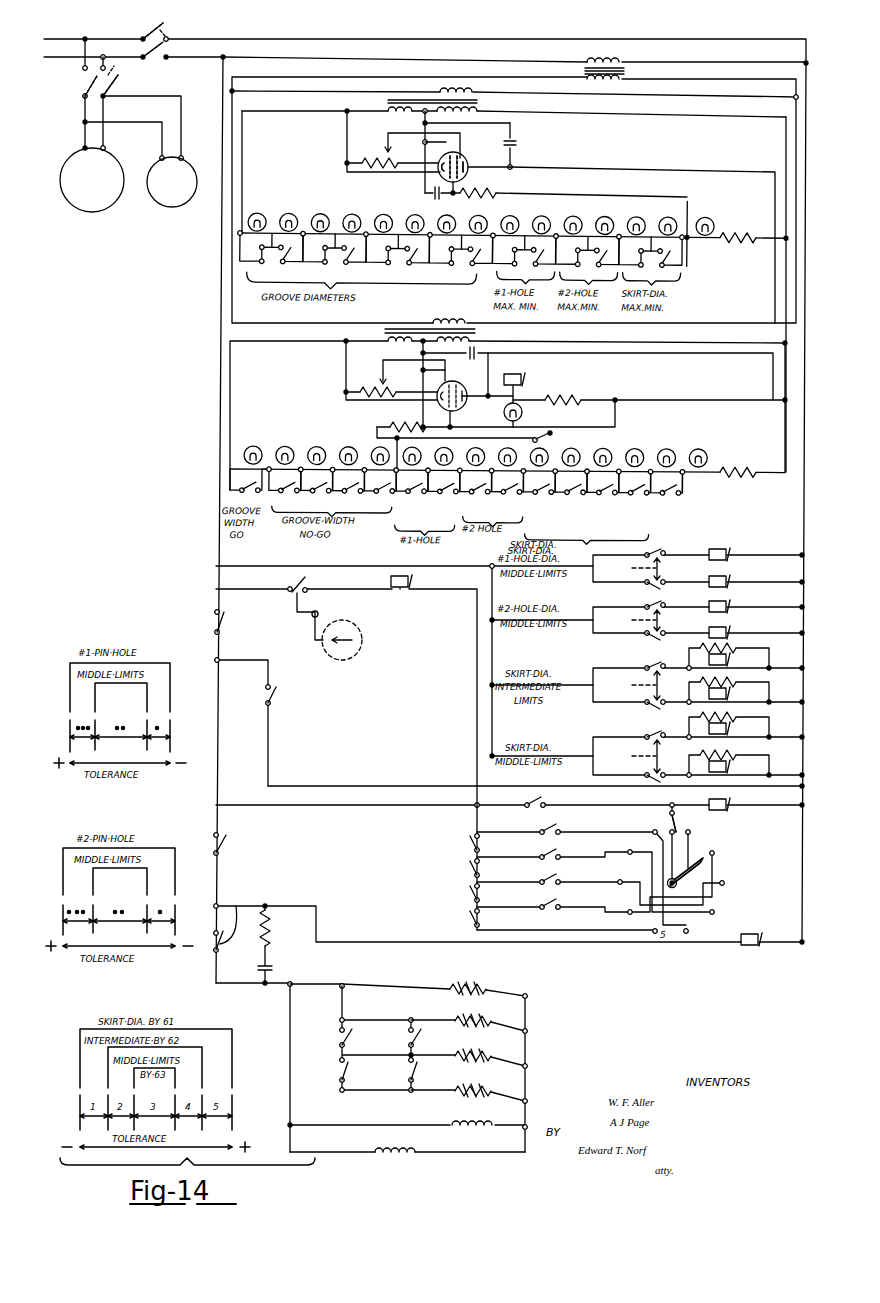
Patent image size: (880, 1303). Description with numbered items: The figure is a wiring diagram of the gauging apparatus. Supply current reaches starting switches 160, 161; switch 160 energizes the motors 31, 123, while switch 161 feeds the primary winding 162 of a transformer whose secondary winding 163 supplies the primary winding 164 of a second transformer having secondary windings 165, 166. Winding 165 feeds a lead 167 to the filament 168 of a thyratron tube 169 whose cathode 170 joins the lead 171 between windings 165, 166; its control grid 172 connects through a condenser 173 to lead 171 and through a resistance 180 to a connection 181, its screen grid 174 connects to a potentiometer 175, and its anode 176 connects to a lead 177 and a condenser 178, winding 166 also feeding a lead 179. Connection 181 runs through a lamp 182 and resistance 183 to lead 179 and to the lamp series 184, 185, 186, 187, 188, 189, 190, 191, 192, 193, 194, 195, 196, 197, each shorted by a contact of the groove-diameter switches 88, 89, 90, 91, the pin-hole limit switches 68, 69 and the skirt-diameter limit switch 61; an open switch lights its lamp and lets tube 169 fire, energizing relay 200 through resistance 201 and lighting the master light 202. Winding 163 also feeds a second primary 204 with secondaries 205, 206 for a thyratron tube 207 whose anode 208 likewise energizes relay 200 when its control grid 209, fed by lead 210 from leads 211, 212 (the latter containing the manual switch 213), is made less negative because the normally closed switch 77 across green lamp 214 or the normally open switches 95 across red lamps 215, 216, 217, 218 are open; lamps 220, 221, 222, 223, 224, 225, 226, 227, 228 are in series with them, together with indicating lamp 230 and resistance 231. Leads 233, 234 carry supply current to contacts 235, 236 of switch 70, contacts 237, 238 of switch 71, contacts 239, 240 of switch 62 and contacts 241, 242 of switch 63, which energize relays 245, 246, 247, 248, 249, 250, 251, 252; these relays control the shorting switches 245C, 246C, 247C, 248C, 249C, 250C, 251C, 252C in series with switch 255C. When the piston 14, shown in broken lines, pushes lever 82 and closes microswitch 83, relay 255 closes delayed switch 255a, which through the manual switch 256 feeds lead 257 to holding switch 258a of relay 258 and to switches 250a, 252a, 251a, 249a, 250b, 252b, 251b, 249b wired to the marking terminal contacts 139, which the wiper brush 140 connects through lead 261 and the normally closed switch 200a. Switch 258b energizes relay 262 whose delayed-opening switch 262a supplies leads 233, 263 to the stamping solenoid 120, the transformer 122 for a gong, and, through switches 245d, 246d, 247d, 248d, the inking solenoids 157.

The starting switch 161 is at (170, 32).
The starting switch 160 is at (87, 82).
The drive motor 31 is at (92, 180).
The motor 123 is at (172, 182).
The primary winding 162 is at (612, 58).
The secondary winding 163 is at (622, 76).
The primary winding 164 is at (458, 88).
The secondary winding 165 is at (385, 110).
The secondary winding 166 is at (477, 110).
The lead 167 is at (243, 140).
The lead 171 is at (412, 123).
The potentiometer 175 is at (378, 150).
The thyratron tube 169 is at (458, 158).
The screen grid 174 is at (460, 160).
The anode 176 is at (470, 164).
The condenser 178 is at (516, 140).
The filament 168 is at (440, 172).
The cathode 170 is at (449, 178).
The control grid 172 is at (456, 186).
The condenser 173 is at (430, 190).
The resistance 180 is at (492, 188).
The lead 177 is at (650, 166).
The lead 179 is at (784, 145).
The connection 181 is at (688, 212).
The lamp 182 is at (712, 212).
The resistance 183 is at (742, 226).
The lamp 184 is at (255, 216).
The lamp 185 is at (287, 216).
The lamp 186 is at (318, 217).
The lamp 187 is at (350, 217).
The lamp 188 is at (382, 217).
The lamp 189 is at (413, 218).
The lamp 190 is at (445, 218).
The lamp 191 is at (477, 218).
The lamp 192 is at (508, 218).
The lamp 193 is at (540, 219).
The lamp 194 is at (571, 219).
The lamp 195 is at (603, 219).
The lamp 196 is at (635, 220).
The lamp 197 is at (666, 220).
The switch 88 is at (271, 256).
The switch 89 is at (334, 257).
The switch 90 is at (397, 257).
The switch 91 is at (460, 258).
The switch 68 is at (523, 259).
The switch 69 is at (587, 260).
The switch 61 is at (650, 261).
The transformer primary 204 is at (470, 331).
The secondary winding 205 is at (386, 340).
The secondary winding 206 is at (480, 345).
The lead 233 is at (230, 384).
The thyratron tube 207 is at (462, 382).
The anode 208 is at (466, 392).
The control grid 209 is at (410, 384).
The relay 200 is at (518, 367).
The master light 202 is at (522, 413).
The resistance 201 is at (572, 394).
The lead 210 is at (392, 423).
The lead 211 is at (408, 438).
The manually operable switch 213 is at (554, 432).
The lead 212 is at (628, 446).
The green lamp 214 is at (252, 445).
The red lamp 215 is at (283, 445).
The red lamp 216 is at (314, 445).
The red lamp 217 is at (345, 446).
The red lamp 218 is at (375, 447).
The lamp 220 is at (419, 452).
The lamp 221 is at (452, 452).
The lamp 222 is at (484, 453).
The lamp 223 is at (514, 453).
The lamp 224 is at (545, 454).
The lamp 225 is at (578, 448).
The lamp 226 is at (610, 448).
The lamp 227 is at (642, 448).
The lamp 228 is at (674, 448).
The indicating lamp 230 is at (706, 448).
The resistance 231 is at (742, 462).
The lead 234 is at (798, 494).
The normally closed switch 77 is at (250, 487).
The normally open switches 95 is at (333, 487).
The switch 245C is at (411, 495).
The switch 246C is at (445, 494).
The switch 247C is at (475, 495).
The switch 248C is at (508, 494).
The switch 249C is at (538, 495).
The switch 250C is at (572, 494).
The switch 251C is at (602, 495).
The switch 252C is at (636, 494).
The switch 255C is at (667, 492).
The switch 70 is at (626, 569).
The switch 71 is at (626, 620).
The switch 62 is at (626, 685).
The switch 63 is at (626, 756).
The switch contact 235 is at (664, 550).
The switch contact 236 is at (664, 585).
The switch contact 237 is at (664, 602).
The switch contact 238 is at (664, 636).
The switch contact 239 is at (660, 660).
The switch contact 240 is at (666, 706).
The switch contact 241 is at (660, 729).
The switch contact 242 is at (660, 780).
The switch operating relay 245 is at (732, 556).
The switch operating relay 246 is at (732, 582).
The switch operating relay 247 is at (732, 608).
The switch operating relay 248 is at (732, 634).
The switch operating relay 249 is at (732, 661).
The switch operating relay 250 is at (732, 695).
The switch operating relay 251 is at (732, 730).
The switch operating relay 252 is at (732, 768).
The relay 258 is at (732, 806).
The switch controlling relay 255 is at (412, 583).
The relay 262 is at (752, 932).
The lead 257 is at (328, 780).
The holding switch 258a is at (500, 796).
The switch 258b is at (224, 845).
The microswitch 83 is at (303, 578).
The lever 82 is at (312, 632).
The cam 14 is at (360, 630).
The supply switch 256 is at (222, 622).
The switch 255a is at (276, 692).
The time delay switch 262a is at (236, 906).
The lead 263 is at (292, 982).
The switch 250a is at (540, 826).
The switch 250b is at (468, 842).
The switch 252a is at (540, 851).
The switch 252b is at (468, 867).
The switch 251a is at (540, 876).
The switch 251b is at (468, 892).
The switch 249a is at (540, 901).
The switch 249b is at (468, 917).
The switch 200a is at (668, 818).
The lead 261 is at (678, 822).
The contact 139 is at (700, 832).
The wiper contact 140 is at (702, 870).
The solenoid 120 is at (468, 982).
The solenoid 157 is at (468, 1006).
The transformer 122 is at (460, 1110).
The switch 245d is at (336, 1036).
The switch 246d is at (336, 1072).
The switch 247d is at (405, 1036).
The switch 248d is at (405, 1072).